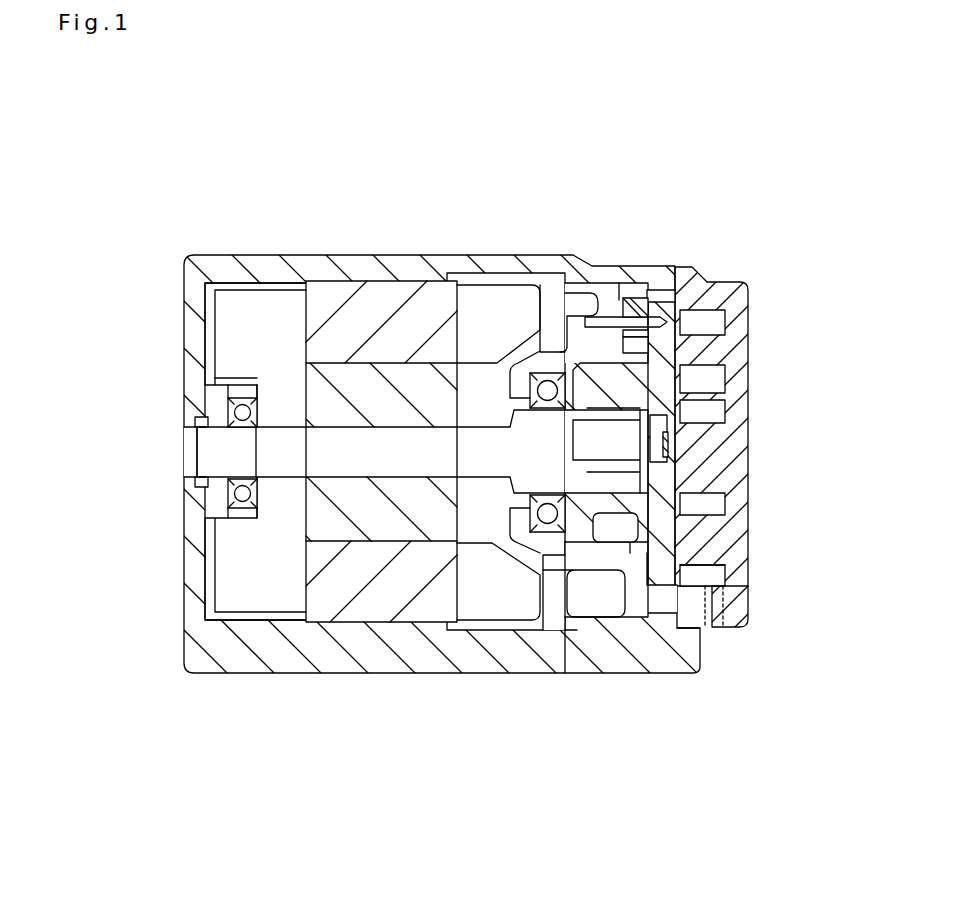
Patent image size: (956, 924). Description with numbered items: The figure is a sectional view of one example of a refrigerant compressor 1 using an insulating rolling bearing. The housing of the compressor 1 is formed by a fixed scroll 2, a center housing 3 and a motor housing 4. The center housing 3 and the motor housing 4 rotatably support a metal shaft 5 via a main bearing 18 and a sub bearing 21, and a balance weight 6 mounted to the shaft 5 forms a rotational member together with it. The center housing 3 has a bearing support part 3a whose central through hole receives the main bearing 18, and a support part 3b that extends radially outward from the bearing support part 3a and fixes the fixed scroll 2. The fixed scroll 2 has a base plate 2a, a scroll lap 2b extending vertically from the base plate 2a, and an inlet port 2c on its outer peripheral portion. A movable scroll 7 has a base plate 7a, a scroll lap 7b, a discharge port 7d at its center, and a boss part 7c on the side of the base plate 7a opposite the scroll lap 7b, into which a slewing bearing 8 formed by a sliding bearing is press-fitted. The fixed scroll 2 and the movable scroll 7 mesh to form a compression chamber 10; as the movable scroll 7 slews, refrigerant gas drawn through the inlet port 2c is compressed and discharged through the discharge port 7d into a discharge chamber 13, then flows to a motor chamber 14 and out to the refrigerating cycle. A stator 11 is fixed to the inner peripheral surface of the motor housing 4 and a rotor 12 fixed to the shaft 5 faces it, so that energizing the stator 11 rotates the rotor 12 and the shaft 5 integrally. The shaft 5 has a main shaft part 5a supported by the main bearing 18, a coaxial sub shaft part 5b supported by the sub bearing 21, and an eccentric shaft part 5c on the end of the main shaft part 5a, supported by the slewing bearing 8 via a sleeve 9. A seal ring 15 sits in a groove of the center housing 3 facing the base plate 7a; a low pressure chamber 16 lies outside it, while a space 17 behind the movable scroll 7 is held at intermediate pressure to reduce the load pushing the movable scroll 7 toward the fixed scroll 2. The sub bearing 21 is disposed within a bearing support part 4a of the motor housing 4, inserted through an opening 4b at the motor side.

The compressor 1 is at (183, 246).
The fixed scroll 2 is at (747, 460).
The base plate 2a is at (733, 586).
The scroll lap 2b is at (708, 540).
The inlet port 2c is at (730, 613).
The center housing 3 is at (596, 481).
The bearing support part 3a is at (515, 556).
The support part 3b is at (613, 658).
The motor housing 4 is at (297, 280).
The bearing support part 4a is at (257, 500).
The opening 4b is at (235, 515).
The shaft 5 is at (355, 450).
The main shaft part 5a is at (463, 547).
The sub shaft part 5b is at (235, 452).
The eccentric shaft part 5c is at (613, 428).
The balance weight 6 is at (598, 627).
The movable scroll 7 is at (680, 323).
The base plate 7a is at (698, 572).
The scroll lap 7b is at (700, 345).
The boss part 7c is at (553, 637).
The discharge port 7d is at (690, 406).
The slewing bearing 8 is at (700, 362).
The sleeve 9 is at (575, 332).
The compression chamber 10 is at (708, 450).
The stator 11 is at (387, 307).
The rotor 12 is at (437, 390).
The discharge chamber 13 is at (712, 467).
The motor chamber 14 is at (270, 375).
The seal ring 15 is at (647, 545).
The low pressure chamber 16 is at (693, 636).
The space 17 is at (632, 545).
The main bearing 18 is at (522, 347).
The sub bearing 21 is at (226, 402).